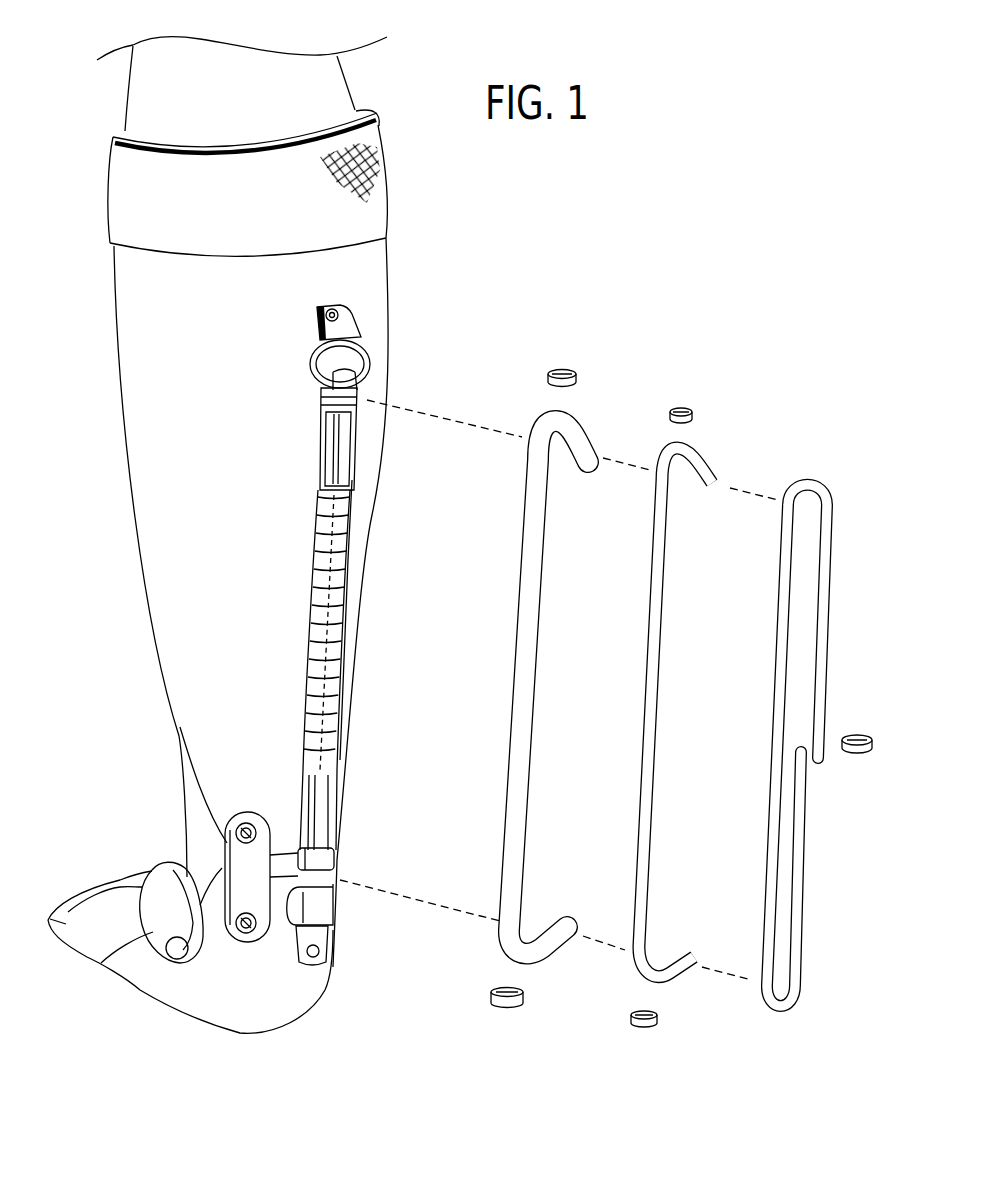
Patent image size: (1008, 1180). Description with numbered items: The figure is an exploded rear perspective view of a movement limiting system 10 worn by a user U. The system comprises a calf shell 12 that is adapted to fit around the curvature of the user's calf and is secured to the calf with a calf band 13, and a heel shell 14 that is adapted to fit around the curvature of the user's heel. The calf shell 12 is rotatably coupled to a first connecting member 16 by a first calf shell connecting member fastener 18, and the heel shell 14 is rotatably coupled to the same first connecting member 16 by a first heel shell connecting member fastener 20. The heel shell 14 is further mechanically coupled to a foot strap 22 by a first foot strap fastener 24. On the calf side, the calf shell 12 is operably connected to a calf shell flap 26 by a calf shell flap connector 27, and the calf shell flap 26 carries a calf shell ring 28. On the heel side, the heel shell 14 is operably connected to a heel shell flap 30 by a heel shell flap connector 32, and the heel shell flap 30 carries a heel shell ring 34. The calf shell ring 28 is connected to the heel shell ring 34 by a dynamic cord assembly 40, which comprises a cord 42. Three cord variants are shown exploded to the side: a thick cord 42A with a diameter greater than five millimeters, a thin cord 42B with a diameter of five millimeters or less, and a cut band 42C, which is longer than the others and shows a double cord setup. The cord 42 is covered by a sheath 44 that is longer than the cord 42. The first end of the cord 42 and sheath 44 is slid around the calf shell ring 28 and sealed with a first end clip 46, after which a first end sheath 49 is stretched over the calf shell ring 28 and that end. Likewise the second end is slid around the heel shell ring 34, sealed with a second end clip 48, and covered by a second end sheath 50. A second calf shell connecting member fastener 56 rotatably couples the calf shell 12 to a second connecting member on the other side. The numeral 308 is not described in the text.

The user U is at (333, 90).
The movement limiting system 10 is at (483, 243).
The calf shell 12 is at (217, 551).
The calf band 13 is at (388, 180).
The heel shell 14 is at (167, 987).
The first connecting member 16 is at (237, 887).
The first calf shell connecting member fastener 18 is at (251, 816).
The first heel shell connecting member fastener 20 is at (249, 943).
The foot strap 22 is at (163, 872).
The first foot strap fastener 24 is at (167, 947).
The calf shell flap 26 is at (318, 328).
The calf shell flap connector 27 is at (340, 310).
The calf shell ring 28 is at (313, 366).
The heel shell flap 30 is at (327, 947).
The heel shell flap connector 32 is at (329, 968).
The heel shell ring 34 is at (340, 897).
The dynamic cord assembly 40 is at (398, 436).
The cord 42 is at (720, 367).
The thick cord 42A is at (527, 683).
The thin cord 42B is at (655, 687).
The cut band 42C is at (785, 680).
The sheath 44 is at (350, 600).
The first end clip 46 is at (322, 420).
The second end clip 48 is at (333, 862).
The first end sheath 49 is at (320, 462).
The second end sheath 50 is at (301, 795).
The second calf shell connecting member fastener 56 is at (330, 795).
The hook attachment 308 is at (450, 438).